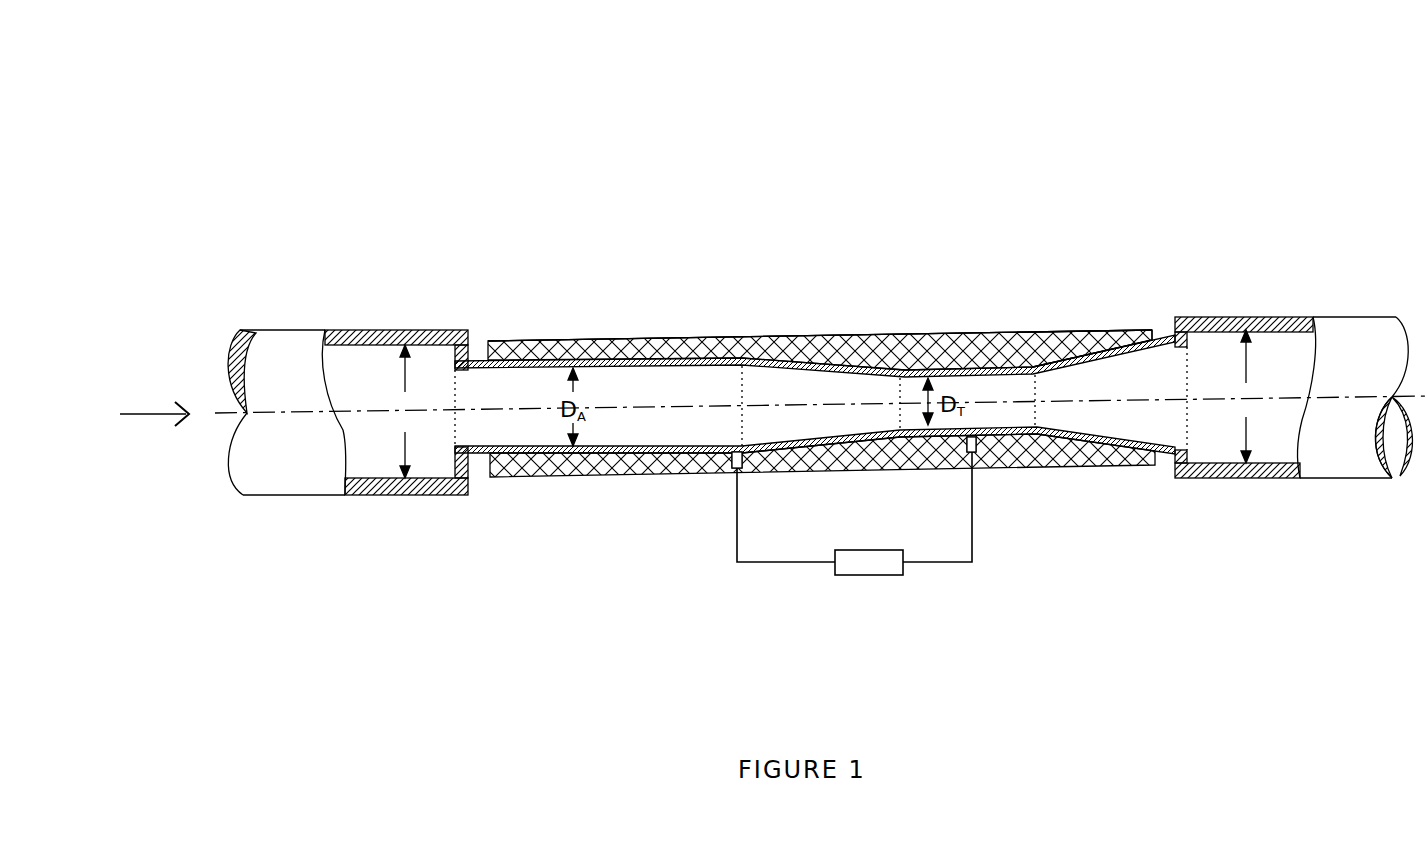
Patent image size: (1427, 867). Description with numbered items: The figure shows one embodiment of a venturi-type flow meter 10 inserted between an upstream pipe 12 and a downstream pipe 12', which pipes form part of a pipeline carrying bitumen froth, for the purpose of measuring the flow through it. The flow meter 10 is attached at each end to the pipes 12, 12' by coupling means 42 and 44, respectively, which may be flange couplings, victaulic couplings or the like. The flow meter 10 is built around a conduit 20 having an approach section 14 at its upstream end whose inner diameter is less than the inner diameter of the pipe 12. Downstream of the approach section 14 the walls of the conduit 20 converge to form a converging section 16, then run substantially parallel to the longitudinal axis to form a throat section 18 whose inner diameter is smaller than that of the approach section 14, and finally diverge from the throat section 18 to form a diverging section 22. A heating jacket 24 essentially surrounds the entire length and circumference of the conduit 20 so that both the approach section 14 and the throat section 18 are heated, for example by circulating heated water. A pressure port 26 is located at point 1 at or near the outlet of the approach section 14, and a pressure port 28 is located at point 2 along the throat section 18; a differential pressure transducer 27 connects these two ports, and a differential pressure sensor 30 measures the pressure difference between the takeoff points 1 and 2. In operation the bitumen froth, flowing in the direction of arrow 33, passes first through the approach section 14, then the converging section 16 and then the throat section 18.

The first pressure takeoff point 1 is at (741, 450).
The second pressure takeoff point 2 is at (972, 437).
The flow meter 10 is at (970, 322).
The pipe 12 is at (348, 422).
The pipe 12' is at (1293, 411).
The approach section 14 is at (648, 341).
The converging section 16 is at (768, 357).
The throat section 18 is at (1003, 333).
The conduit 20 is at (880, 333).
The diverging section 22 is at (1125, 333).
The heating jacket 24 is at (1067, 463).
The pressure port 26 is at (732, 470).
The differential pressure transducer 27 is at (784, 573).
The pressure port 28 is at (987, 470).
The differential pressure sensor 30 is at (870, 575).
The arrow 33 is at (133, 415).
The coupling means 42 is at (471, 330).
The coupling means 44 is at (1172, 455).